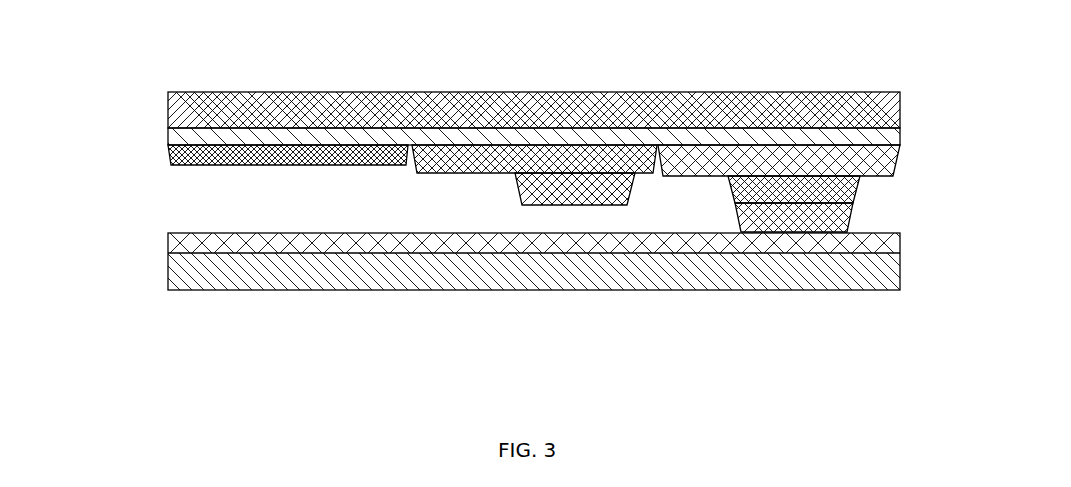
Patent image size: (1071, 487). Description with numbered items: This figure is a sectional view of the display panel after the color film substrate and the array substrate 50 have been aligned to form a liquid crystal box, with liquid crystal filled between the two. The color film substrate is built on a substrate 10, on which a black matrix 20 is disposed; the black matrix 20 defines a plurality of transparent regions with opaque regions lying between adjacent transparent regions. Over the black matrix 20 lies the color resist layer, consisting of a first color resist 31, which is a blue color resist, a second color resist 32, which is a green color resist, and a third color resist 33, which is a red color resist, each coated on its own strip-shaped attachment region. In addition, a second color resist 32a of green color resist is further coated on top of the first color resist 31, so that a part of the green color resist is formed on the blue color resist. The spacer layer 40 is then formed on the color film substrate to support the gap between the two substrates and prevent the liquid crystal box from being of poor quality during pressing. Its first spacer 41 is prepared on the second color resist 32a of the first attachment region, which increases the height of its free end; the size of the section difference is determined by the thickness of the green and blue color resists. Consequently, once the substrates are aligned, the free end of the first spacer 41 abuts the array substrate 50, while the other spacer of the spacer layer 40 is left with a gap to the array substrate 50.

The substrate 10 is at (868, 99).
The black matrix 20 is at (900, 128).
The first color resist 31 is at (893, 150).
The second color resist 32 is at (455, 145).
The second color resist 32a is at (856, 186).
The third color resist 33 is at (313, 165).
The spacer layer 40 is at (543, 196).
The first spacer 41 is at (848, 217).
The array substrate 50 is at (876, 278).